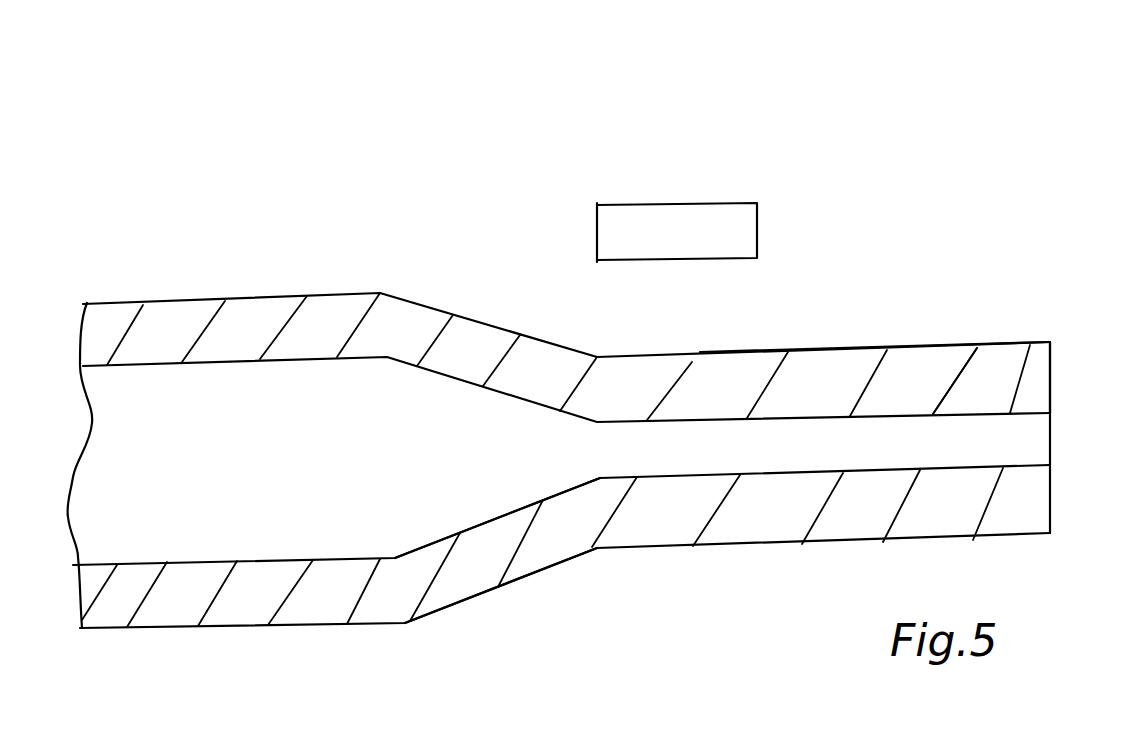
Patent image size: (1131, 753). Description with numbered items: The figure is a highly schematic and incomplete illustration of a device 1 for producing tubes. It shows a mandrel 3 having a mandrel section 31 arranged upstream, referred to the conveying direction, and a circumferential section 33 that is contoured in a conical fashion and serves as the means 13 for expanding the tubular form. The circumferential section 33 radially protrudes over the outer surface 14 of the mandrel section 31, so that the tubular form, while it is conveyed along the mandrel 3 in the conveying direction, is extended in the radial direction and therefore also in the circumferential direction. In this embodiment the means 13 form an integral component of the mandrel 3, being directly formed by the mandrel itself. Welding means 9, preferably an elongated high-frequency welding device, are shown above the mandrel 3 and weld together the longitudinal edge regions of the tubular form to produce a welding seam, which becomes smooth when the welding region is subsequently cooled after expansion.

The device for producing tubes 1 is at (527, 68).
The mandrel 3 is at (1030, 392).
The welding means 9 is at (732, 218).
The means for expanding the tubular form 13 is at (537, 550).
The outer surface of the mandrel section 14 is at (877, 350).
The mandrel section 31 is at (953, 380).
The circumferential section 33 is at (483, 577).